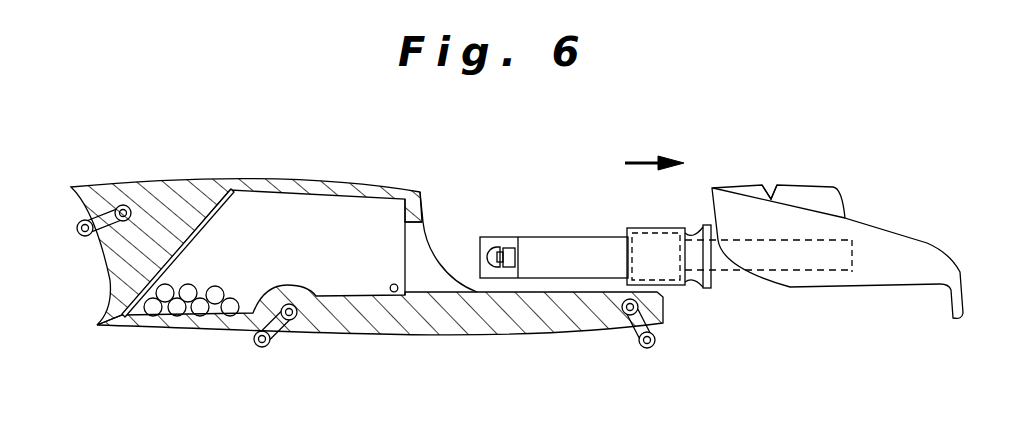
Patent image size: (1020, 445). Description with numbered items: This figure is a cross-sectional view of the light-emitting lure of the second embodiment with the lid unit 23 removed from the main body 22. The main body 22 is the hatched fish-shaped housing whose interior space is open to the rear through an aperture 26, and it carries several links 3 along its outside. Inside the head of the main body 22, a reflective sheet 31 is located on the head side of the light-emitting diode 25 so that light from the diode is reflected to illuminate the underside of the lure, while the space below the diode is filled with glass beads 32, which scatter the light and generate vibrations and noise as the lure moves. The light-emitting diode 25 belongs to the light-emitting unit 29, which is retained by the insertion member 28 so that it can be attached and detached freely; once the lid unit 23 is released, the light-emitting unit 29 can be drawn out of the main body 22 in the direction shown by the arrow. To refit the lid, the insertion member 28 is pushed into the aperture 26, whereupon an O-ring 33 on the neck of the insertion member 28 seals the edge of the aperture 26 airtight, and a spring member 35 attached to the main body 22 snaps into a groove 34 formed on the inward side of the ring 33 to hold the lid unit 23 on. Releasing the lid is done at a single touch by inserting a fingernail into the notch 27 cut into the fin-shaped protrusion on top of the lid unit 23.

The link 3 is at (84, 237).
The main body 22 is at (183, 178).
The lid unit 23 is at (878, 242).
The light-emitting diode 25 is at (494, 249).
The aperture 26 is at (428, 225).
The notch 27 is at (771, 196).
The insertion member 28 is at (647, 227).
The light-emitting unit 29 is at (577, 234).
The reflective sheet 31 is at (218, 213).
The glass beads 32 is at (175, 313).
The O-ring 33 is at (728, 282).
The groove 34 is at (693, 287).
The spring member 35 is at (390, 285).